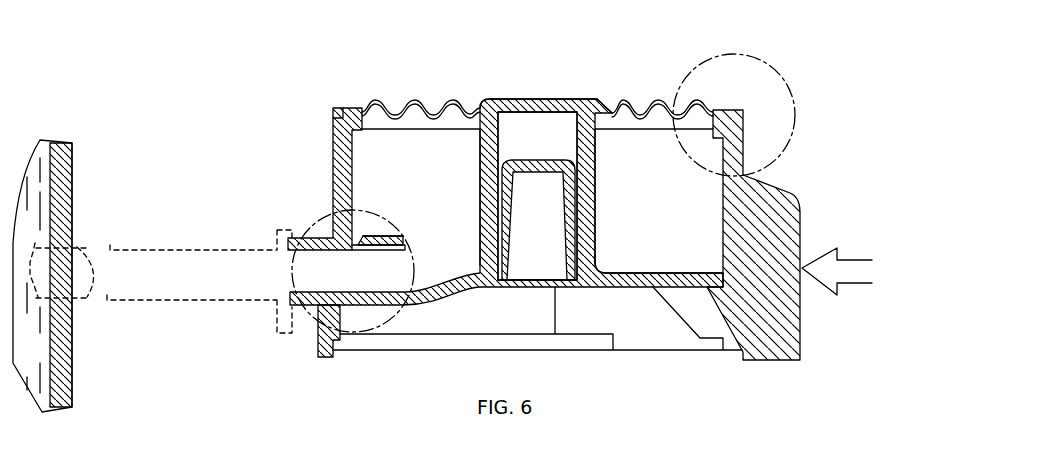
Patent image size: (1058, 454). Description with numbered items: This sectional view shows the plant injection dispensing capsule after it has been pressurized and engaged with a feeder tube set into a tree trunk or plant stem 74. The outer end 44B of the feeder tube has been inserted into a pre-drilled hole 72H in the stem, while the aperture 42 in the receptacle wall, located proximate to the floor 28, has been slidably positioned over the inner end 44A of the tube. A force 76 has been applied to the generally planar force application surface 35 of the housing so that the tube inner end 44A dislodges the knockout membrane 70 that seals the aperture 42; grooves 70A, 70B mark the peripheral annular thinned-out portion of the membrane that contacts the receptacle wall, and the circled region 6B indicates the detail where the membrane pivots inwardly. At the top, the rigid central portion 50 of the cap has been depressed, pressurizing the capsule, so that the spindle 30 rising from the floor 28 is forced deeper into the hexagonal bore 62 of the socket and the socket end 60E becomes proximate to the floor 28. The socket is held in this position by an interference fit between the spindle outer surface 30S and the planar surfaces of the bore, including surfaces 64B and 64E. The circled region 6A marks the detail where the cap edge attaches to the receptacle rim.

The tree trunk or plant stem 74 is at (72, 177).
The outer end of feeder tube 44B is at (80, 247).
The inner end of feeder tube 44A is at (355, 272).
The pre-drilled hole 72H is at (85, 297).
The detail circle 6B is at (310, 314).
The detail circle 6A is at (766, 60).
The spindle 30 is at (523, 152).
The rigid central portion 50 is at (540, 98).
The hexagonal-shaped bore 62 is at (566, 141).
The planar surface 64B is at (495, 180).
The planar surface 64E is at (582, 180).
The outer surface of spindle 30S is at (582, 195).
The socket end 60E is at (593, 262).
The floor 28 is at (672, 270).
The force application surface 35 is at (800, 207).
The force 76 is at (852, 283).
The knockout membrane 70 is at (372, 236).
The groove 70B is at (398, 233).
The groove 70A is at (395, 245).
The aperture 42 is at (360, 249).